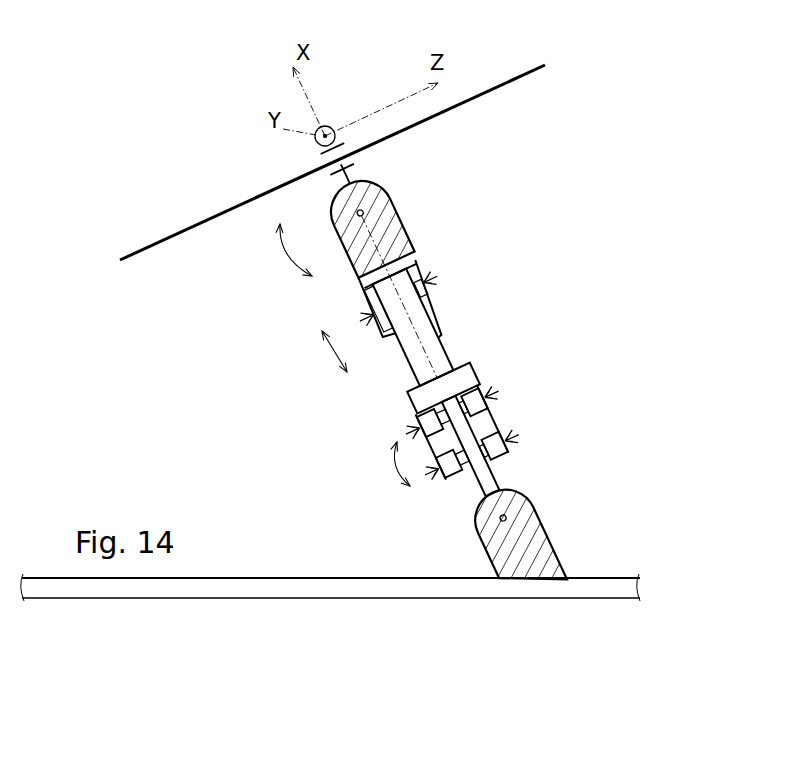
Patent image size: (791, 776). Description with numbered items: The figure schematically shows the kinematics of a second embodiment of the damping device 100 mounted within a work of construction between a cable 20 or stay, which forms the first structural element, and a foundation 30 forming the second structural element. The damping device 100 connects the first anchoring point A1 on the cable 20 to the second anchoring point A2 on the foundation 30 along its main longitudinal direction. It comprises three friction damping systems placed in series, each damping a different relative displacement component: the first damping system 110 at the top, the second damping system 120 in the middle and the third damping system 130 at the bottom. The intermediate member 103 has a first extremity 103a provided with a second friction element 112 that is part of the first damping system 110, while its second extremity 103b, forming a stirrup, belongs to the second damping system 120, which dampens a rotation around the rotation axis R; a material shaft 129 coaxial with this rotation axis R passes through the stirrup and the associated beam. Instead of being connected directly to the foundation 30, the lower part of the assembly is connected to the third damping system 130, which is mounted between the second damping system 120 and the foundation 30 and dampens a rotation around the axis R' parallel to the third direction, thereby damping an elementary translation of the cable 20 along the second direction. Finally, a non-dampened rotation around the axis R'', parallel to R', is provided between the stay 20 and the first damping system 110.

The cable 20 is at (199, 223).
The foundation 30 is at (304, 576).
The damping device 100 is at (578, 167).
The intermediate member 103 is at (435, 387).
The first extremity 103a is at (430, 359).
The second extremity 103b is at (420, 409).
The first damping system 110 is at (389, 269).
The second friction element 112 is at (433, 323).
The second damping system 120 is at (509, 418).
The material shaft 129 is at (503, 429).
The third damping system 130 is at (525, 538).
The first anchoring point A1 is at (308, 163).
The second anchoring point A2 is at (526, 583).
The rotation axis R is at (526, 393).
The rotation axis R' is at (542, 501).
The rotation axis R'' is at (382, 182).